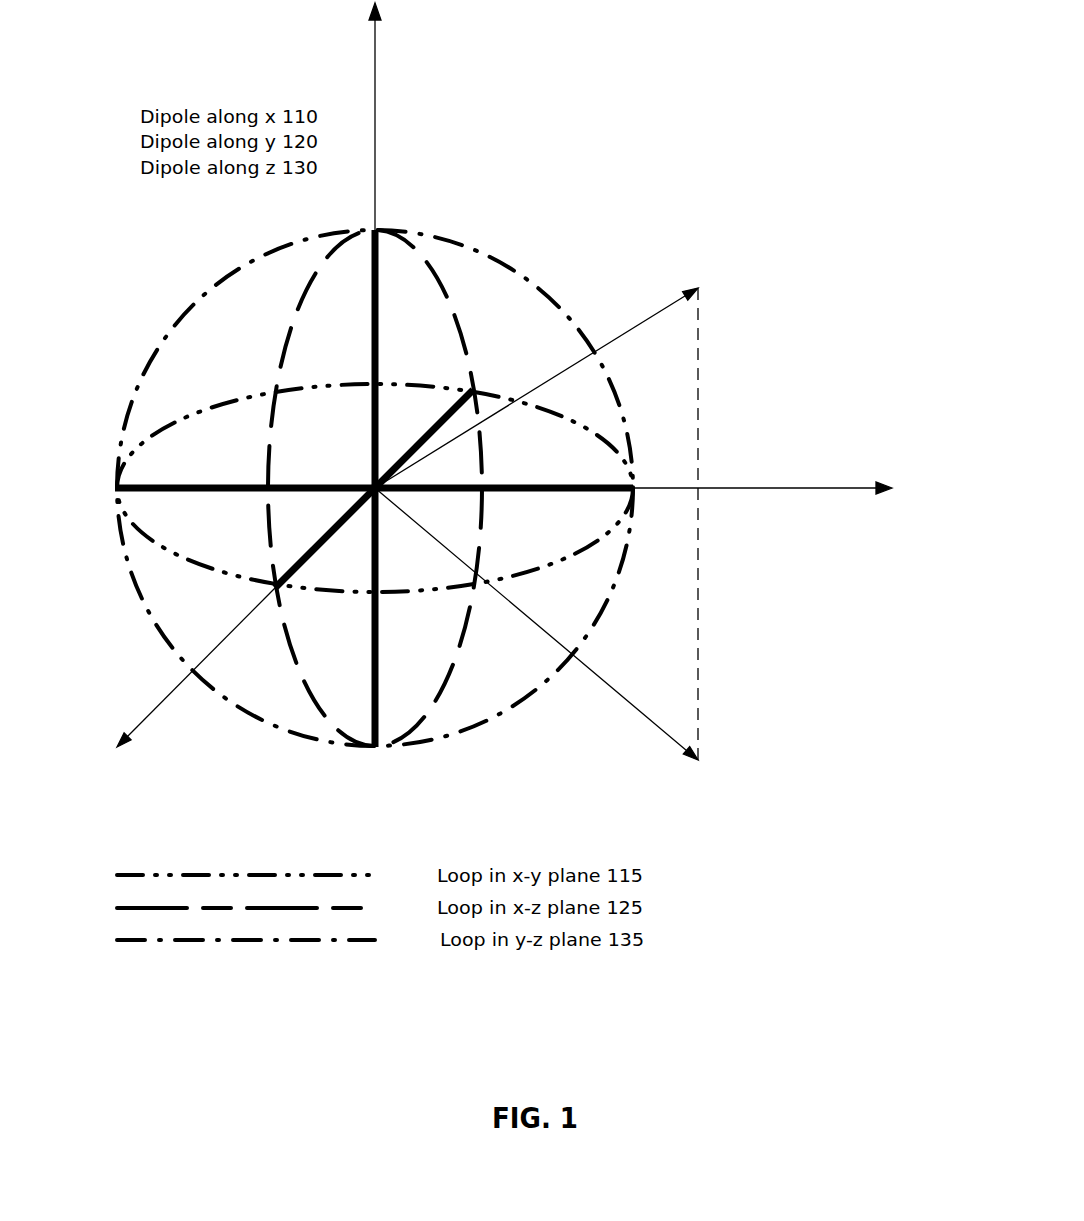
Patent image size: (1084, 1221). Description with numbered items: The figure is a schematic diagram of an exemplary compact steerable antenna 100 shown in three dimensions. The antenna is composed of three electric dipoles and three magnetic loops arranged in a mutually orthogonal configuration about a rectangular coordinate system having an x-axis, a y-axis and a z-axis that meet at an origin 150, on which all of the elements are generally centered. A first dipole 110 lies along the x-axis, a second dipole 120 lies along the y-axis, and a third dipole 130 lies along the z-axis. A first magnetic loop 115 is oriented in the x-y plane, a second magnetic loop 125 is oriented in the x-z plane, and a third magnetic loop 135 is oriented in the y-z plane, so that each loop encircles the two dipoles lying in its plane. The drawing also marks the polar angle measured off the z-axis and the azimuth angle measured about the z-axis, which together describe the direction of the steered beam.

The compact steerable antenna 100 is at (668, 82).
The first dipole 110 is at (310, 548).
The first magnetic loop 115 is at (167, 423).
The second dipole 120 is at (532, 483).
The second magnetic loop 125 is at (282, 337).
The third dipole 130 is at (377, 352).
The third magnetic loop 135 is at (195, 298).
The origin 150 is at (373, 485).